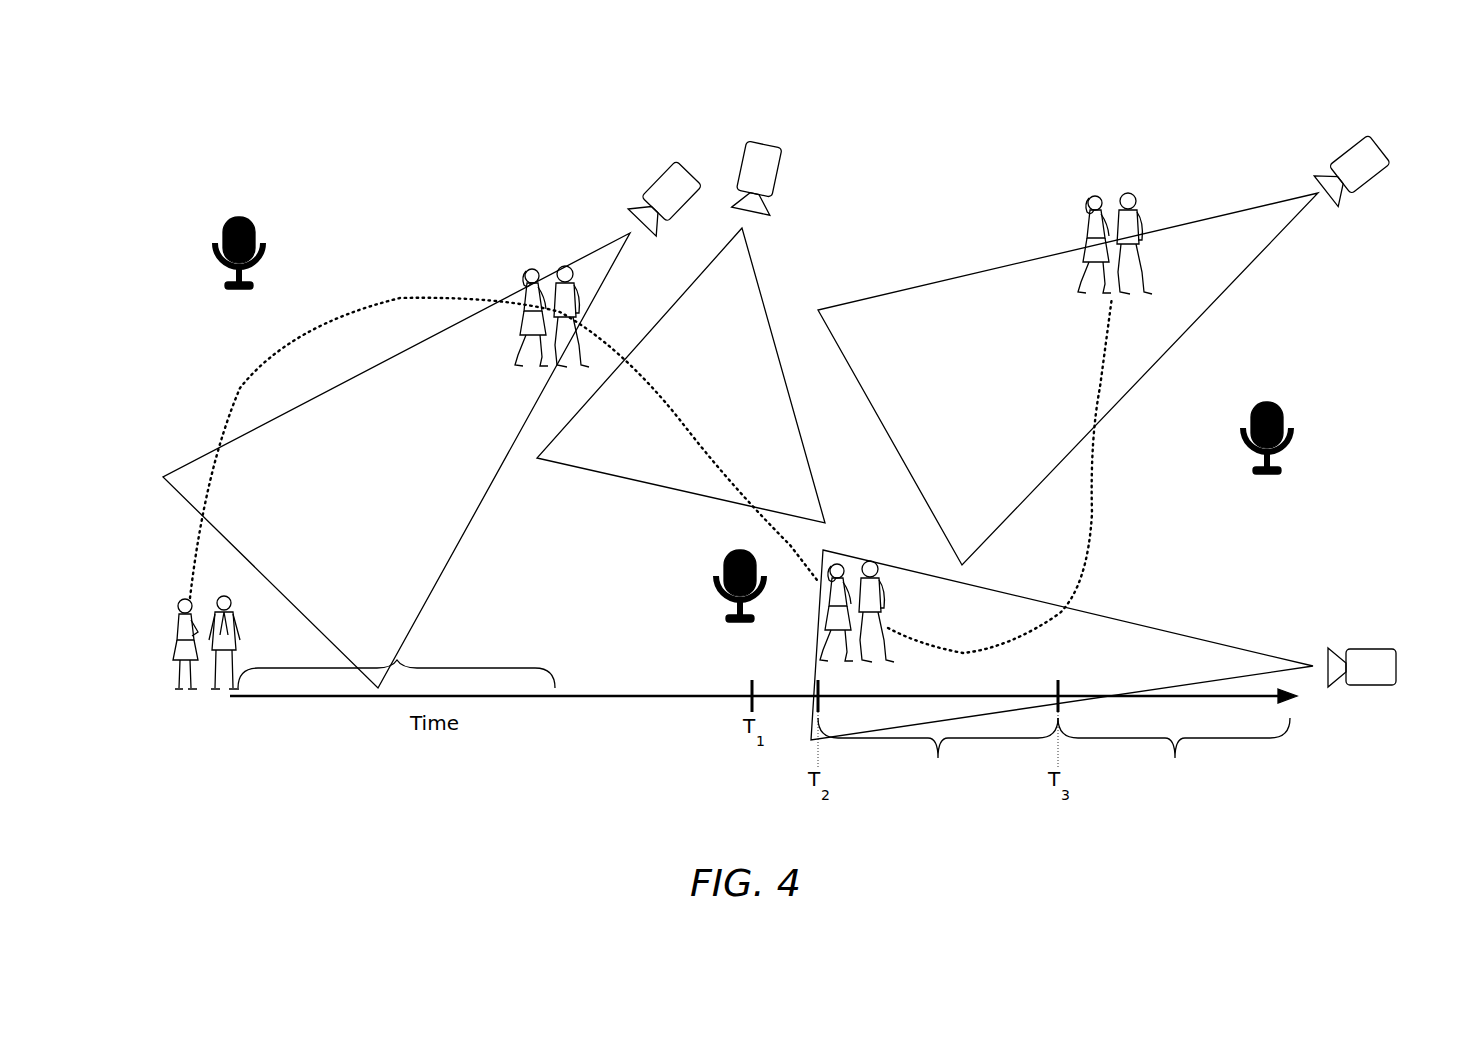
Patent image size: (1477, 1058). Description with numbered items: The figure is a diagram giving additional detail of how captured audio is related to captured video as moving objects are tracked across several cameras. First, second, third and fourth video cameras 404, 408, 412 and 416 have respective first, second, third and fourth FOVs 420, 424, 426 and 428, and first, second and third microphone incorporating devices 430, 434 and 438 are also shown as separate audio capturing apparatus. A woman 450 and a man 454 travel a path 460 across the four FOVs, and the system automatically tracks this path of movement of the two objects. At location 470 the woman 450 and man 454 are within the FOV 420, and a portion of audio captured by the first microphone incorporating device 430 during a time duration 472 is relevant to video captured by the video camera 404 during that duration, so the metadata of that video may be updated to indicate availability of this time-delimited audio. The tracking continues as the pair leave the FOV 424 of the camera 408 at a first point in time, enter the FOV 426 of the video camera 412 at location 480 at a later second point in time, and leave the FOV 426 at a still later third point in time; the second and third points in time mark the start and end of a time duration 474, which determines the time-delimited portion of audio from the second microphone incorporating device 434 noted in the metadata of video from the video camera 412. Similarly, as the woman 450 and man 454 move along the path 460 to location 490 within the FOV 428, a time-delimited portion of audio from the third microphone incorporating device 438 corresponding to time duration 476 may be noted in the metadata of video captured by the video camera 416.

The first video camera 404 is at (652, 183).
The second video camera 408 is at (765, 143).
The third video camera 412 is at (1372, 650).
The fourth video camera 416 is at (1378, 150).
The first FOV 420 is at (440, 505).
The second FOV 424 is at (737, 287).
The third FOV 426 is at (1092, 642).
The fourth FOV 428 is at (1193, 282).
The first microphone incorporating device 430 is at (222, 237).
The second microphone incorporating device 434 is at (722, 572).
The third microphone incorporating device 438 is at (1280, 402).
The woman 450 is at (170, 645).
The man 454 is at (237, 652).
The path 460 is at (373, 307).
The location 470 is at (562, 257).
The time duration 472 is at (397, 660).
The time duration 474 is at (938, 755).
The time duration 476 is at (1174, 755).
The location 480 is at (813, 662).
The location 490 is at (1148, 187).